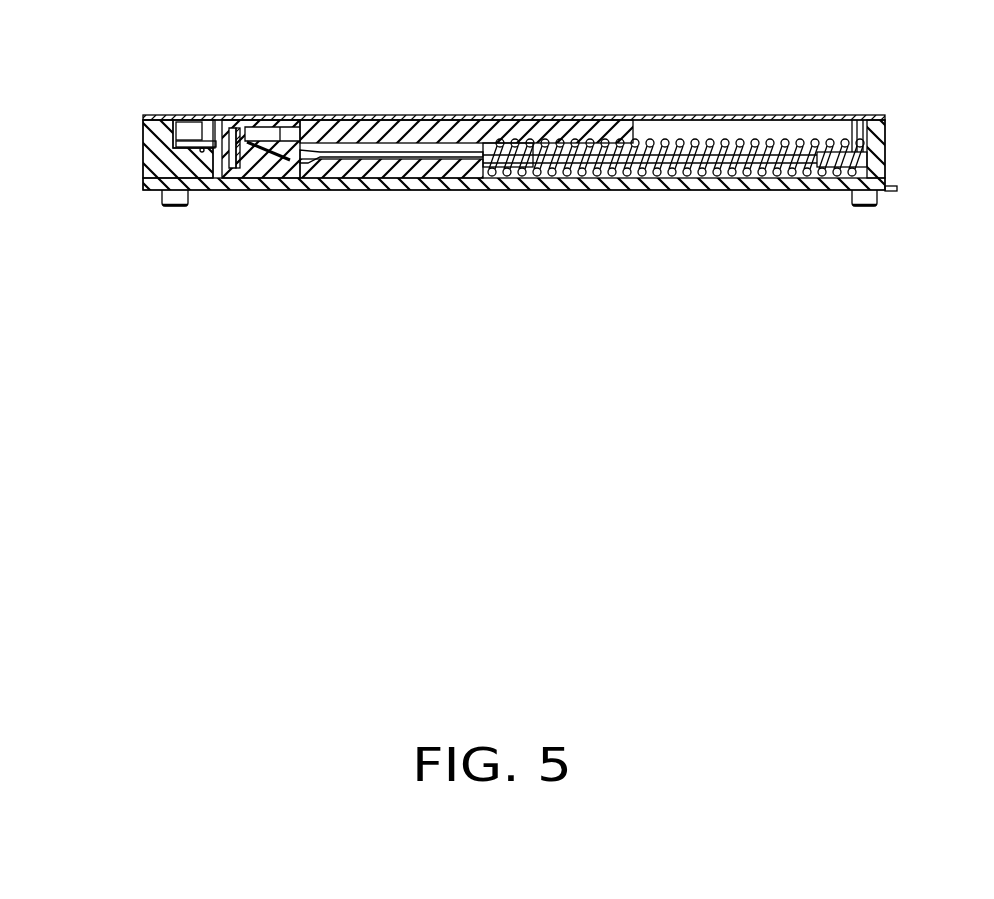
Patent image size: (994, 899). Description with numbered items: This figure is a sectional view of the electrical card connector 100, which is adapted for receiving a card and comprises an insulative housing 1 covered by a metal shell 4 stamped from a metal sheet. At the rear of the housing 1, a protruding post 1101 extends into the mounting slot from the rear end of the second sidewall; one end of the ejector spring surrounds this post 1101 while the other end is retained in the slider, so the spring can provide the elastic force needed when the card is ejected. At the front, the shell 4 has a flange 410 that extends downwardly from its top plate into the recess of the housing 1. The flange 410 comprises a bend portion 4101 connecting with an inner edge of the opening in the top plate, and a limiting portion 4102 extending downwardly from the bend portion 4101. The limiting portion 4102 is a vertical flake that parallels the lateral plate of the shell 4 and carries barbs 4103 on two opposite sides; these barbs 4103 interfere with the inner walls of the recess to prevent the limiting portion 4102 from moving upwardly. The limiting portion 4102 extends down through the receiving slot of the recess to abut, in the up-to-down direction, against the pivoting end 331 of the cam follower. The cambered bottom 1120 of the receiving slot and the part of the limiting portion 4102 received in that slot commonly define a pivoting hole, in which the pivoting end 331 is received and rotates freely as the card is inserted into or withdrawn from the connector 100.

The electrical card connector 100 is at (400, 92).
The insulative housing 1 is at (168, 170).
The metal shell 4 is at (495, 117).
The flange 410 is at (180, 117).
The bend portion 4101 is at (184, 118).
The limiting portion 4102 is at (180, 144).
The barbs 4103 is at (228, 118).
The cambered bottom 1120 is at (203, 150).
The pivoting end 331 is at (258, 166).
The protruding post 1101 is at (838, 162).